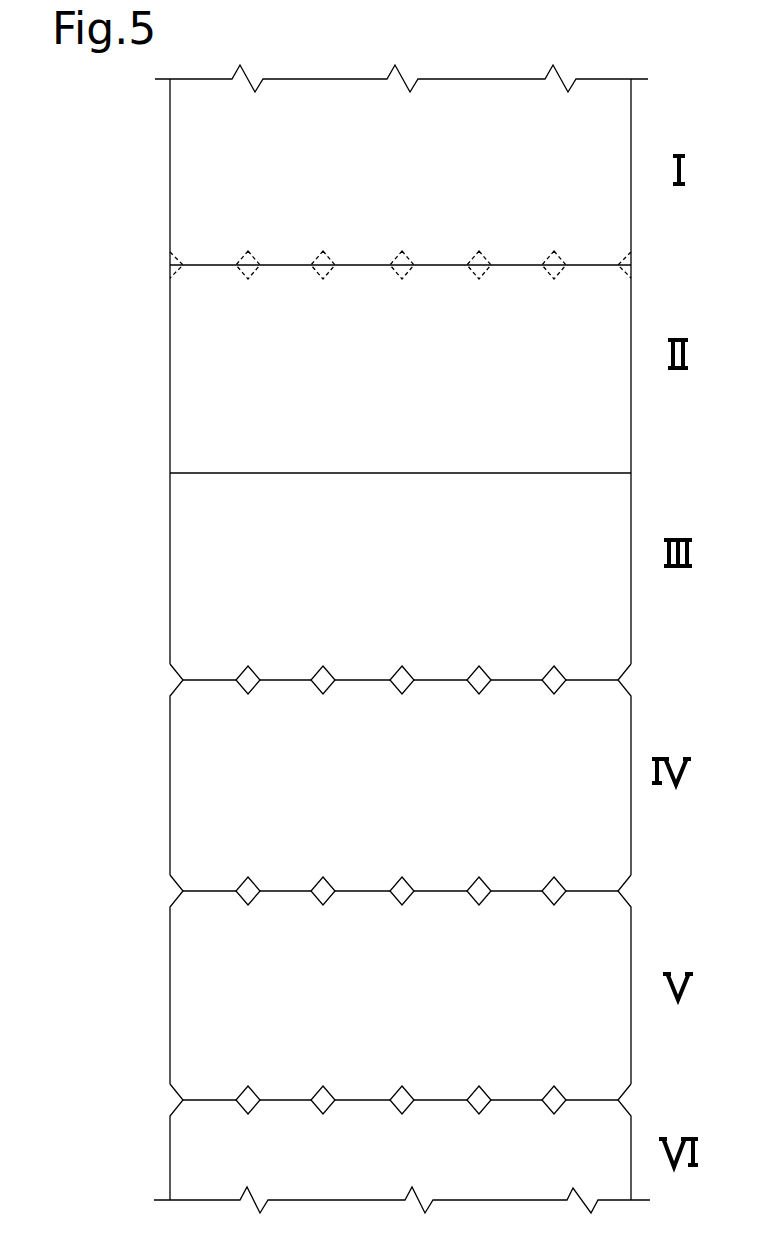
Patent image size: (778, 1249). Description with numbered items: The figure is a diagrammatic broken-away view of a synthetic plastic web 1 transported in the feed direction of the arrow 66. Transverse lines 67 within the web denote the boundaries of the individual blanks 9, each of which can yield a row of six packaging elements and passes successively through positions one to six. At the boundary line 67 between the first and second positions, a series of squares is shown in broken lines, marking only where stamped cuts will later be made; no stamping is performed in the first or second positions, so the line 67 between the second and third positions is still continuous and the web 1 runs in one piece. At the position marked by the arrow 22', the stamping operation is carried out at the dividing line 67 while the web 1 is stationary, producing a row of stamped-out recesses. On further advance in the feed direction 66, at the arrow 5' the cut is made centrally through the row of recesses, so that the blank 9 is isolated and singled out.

The arrow (feed direction) 66 is at (297, 25).
The transverse line 67 is at (203, 268).
The blank 9 is at (421, 1001).
The synthetic plastic web 1 is at (640, 346).
The arrow (stamping position) 22' is at (673, 646).
The arrow (cutting position) 5' is at (672, 1067).